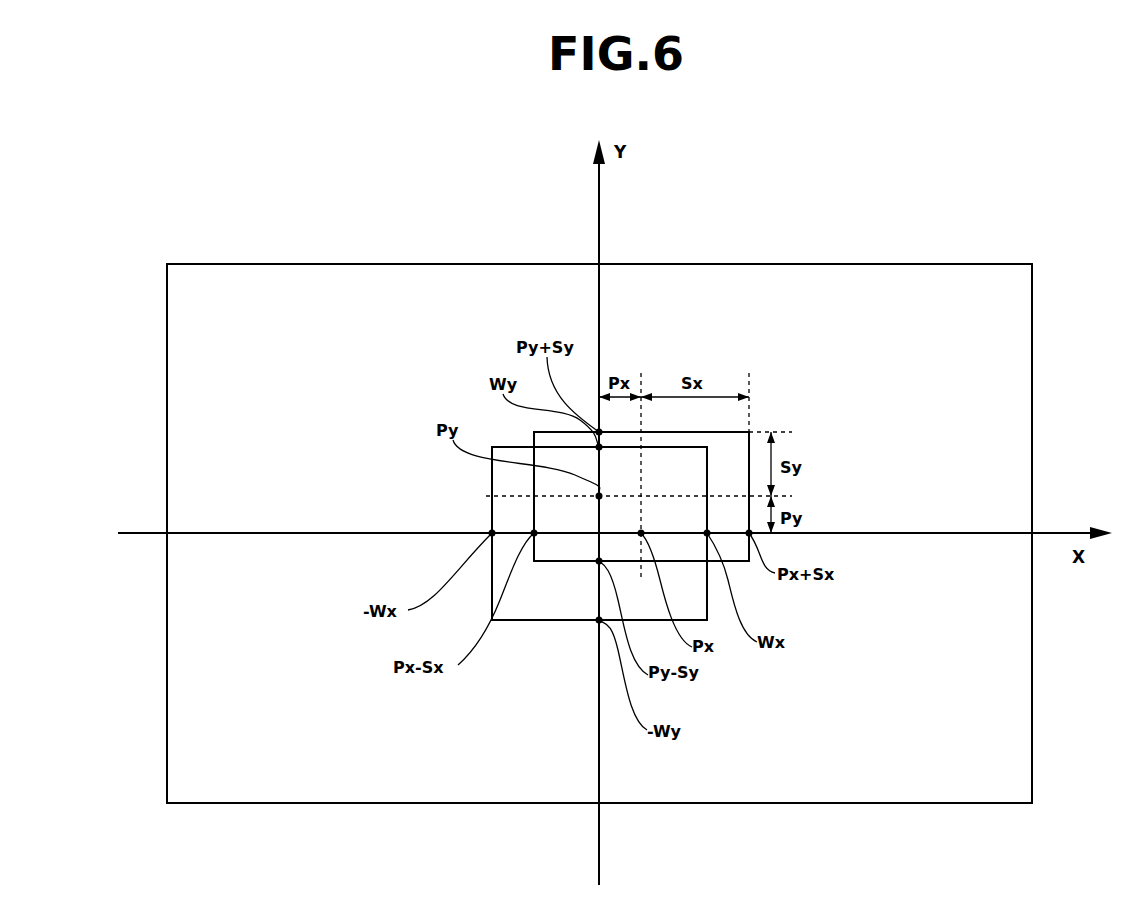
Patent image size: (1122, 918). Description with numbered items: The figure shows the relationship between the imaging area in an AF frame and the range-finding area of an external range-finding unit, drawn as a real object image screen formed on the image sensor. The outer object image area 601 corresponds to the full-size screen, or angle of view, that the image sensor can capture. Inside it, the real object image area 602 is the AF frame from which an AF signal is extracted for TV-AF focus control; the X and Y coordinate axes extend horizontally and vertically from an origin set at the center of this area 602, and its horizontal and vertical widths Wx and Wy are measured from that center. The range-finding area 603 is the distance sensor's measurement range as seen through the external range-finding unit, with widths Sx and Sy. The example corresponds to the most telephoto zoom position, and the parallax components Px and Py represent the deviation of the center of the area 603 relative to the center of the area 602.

The object image area 601 is at (236, 264).
The real object image area 602 is at (528, 620).
The range-finding area 603 is at (728, 432).